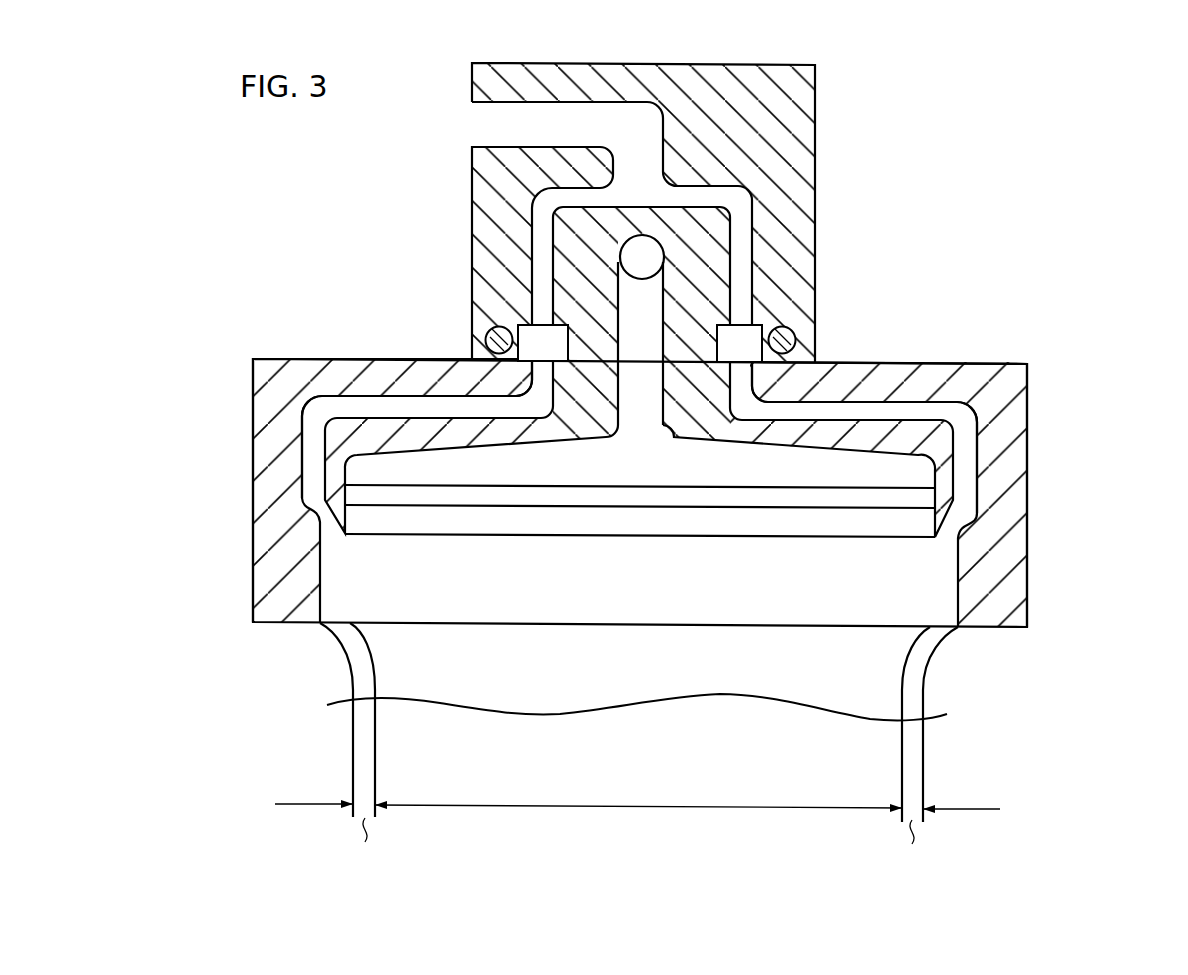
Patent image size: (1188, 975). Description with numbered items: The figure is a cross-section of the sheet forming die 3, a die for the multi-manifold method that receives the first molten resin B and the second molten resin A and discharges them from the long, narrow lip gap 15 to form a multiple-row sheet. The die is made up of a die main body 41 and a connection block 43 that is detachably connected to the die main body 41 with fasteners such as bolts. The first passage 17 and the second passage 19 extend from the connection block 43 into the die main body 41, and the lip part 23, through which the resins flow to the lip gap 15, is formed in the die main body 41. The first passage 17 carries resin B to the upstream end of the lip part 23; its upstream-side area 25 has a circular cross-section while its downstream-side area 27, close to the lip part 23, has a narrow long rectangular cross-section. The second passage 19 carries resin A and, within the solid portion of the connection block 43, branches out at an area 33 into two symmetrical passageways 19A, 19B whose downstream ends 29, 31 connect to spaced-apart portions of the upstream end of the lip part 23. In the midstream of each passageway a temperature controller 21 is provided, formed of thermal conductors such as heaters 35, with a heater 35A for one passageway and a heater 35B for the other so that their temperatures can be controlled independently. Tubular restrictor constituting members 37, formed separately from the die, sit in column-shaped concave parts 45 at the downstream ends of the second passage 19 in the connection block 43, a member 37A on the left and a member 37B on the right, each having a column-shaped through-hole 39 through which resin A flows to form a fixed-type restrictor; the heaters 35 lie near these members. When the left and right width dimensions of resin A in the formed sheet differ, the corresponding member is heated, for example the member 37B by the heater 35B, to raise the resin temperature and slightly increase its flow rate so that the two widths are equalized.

The sheet forming die 3 is at (949, 206).
The lip gap 15 is at (822, 627).
The first passage 17 is at (664, 274).
The second passage 19 is at (588, 118).
The passageway 19A is at (397, 410).
The passageway 19B is at (892, 415).
The temperature controller 21 is at (437, 247).
The lip part 23 is at (965, 538).
The upstream-side area 25 is at (663, 327).
The downstream-side area 27 is at (870, 468).
The downstream end 29 is at (303, 510).
The downstream end 31 is at (947, 538).
The area 33 is at (642, 197).
The heater 35 is at (640, 343).
The heater 35A is at (517, 335).
The heater 35B is at (797, 341).
The restrictor constituting member 37 is at (640, 317).
The restrictor constituting member 37A is at (491, 331).
The restrictor constituting member 37B is at (792, 330).
The through-hole 39 is at (540, 348).
The die main body 41 is at (1027, 468).
The connection block 43 is at (815, 117).
The column-shaped concave part 45 is at (543, 348).